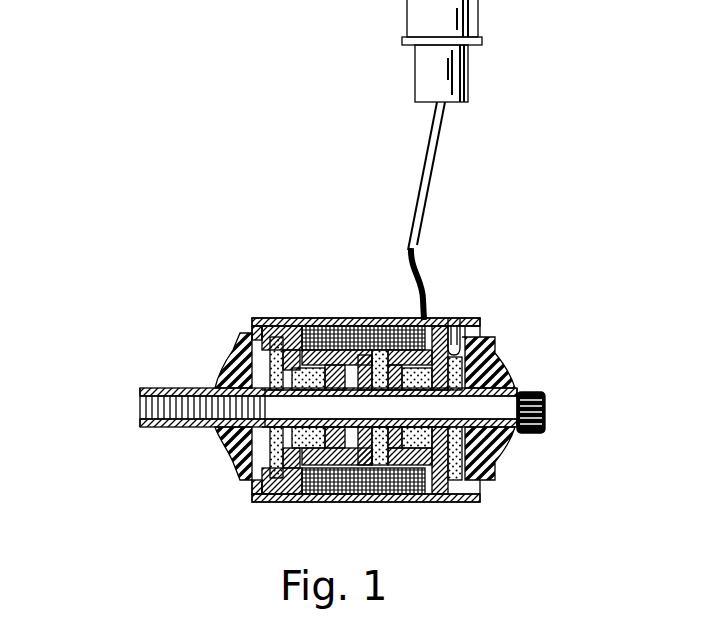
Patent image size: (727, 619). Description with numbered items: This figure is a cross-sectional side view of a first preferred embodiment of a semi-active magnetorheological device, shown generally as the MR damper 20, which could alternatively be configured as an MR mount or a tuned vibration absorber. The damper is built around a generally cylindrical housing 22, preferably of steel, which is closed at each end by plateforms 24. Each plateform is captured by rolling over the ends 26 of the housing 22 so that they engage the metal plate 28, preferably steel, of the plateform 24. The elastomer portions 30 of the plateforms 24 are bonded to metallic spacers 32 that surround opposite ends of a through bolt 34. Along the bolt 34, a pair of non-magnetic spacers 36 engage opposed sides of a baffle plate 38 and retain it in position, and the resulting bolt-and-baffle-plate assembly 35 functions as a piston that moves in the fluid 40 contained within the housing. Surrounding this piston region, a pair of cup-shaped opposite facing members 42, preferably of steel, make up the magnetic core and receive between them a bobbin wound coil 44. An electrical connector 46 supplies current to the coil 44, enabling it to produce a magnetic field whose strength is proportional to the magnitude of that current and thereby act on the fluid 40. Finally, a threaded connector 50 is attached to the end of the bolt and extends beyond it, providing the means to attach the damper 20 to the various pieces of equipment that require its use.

The MR damper 20 is at (471, 296).
The housing 22 is at (283, 318).
The plateforms 24 is at (212, 361).
The ends of housing 26 is at (473, 318).
The metal plate 28 is at (481, 322).
The elastomer portions 30 is at (505, 373).
The metallic spacers 32 is at (520, 392).
The through bolt 34 is at (233, 458).
The bolt-and-baffle-plate assembly 35 is at (333, 502).
The non-magnetic spacers 36 is at (437, 317).
The baffle plate 38 is at (366, 502).
The fluid 40 is at (253, 317).
The cup-shaped opposite facing members 42 is at (386, 319).
The bobbin wound coil 44 is at (405, 500).
The electrical connector 46 is at (463, 72).
The threaded connector 50 is at (150, 402).